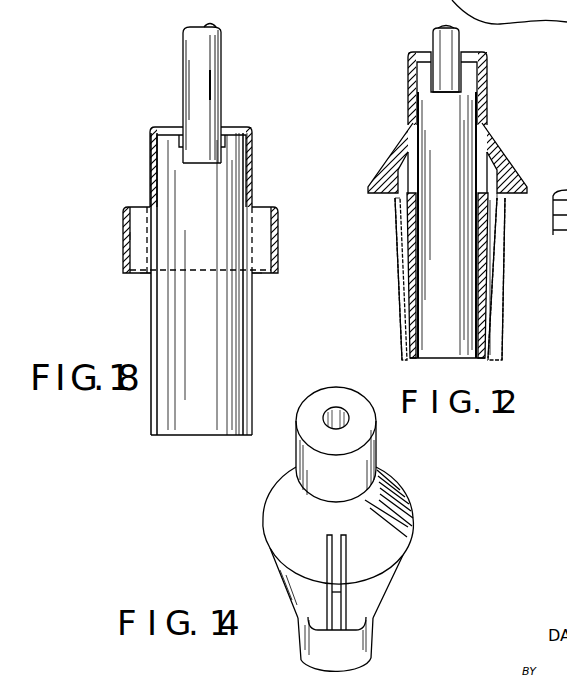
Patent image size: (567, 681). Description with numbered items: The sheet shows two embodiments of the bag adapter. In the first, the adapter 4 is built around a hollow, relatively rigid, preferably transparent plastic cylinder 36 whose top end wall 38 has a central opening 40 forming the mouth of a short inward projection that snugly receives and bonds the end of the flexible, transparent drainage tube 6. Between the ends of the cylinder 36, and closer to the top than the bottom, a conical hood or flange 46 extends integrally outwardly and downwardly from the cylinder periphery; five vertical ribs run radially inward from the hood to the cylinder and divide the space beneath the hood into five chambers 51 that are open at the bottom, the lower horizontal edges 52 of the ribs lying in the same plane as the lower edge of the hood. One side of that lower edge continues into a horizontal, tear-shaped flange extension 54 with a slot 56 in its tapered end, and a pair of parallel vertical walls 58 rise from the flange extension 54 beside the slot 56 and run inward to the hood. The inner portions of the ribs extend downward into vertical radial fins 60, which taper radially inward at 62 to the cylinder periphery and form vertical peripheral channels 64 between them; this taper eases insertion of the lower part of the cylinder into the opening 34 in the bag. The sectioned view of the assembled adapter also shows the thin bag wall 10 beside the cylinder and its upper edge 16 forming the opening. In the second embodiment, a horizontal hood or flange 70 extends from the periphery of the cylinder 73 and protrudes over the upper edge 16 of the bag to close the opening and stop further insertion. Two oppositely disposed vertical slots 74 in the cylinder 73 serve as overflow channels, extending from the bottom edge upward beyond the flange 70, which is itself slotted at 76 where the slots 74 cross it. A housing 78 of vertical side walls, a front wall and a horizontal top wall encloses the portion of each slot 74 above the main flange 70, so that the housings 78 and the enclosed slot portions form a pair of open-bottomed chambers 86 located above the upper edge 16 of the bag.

In FIG. 12, the adapter 4 is at (402, 82).
In FIG. 14, the adapter 4 is at (414, 499).
In FIG. 18, the drainage tube 6 is at (210, 77).
In FIG. 12, the drainage tube 6 is at (462, 40).
In FIG. 12, the protective sleeve 10 is at (395, 262).
In FIG. 12, the upper edge of the bag 16 is at (380, 168).
In FIG. 12, the opening in the bag 34 is at (393, 205).
In FIG. 12, the cylinder 36 is at (488, 86).
In FIG. 14, the cylinder 36 is at (367, 451).
In FIG. 18, the top end wall 38 is at (222, 140).
In FIG. 12, the opening 40 is at (436, 49).
In FIG. 14, the opening 40 is at (340, 412).
In FIG. 12, the hood or flange 46 is at (490, 144).
In FIG. 14, the hood or flange 46 is at (403, 523).
In FIG. 12, the chambers 51 is at (508, 164).
In FIG. 12, the lower horizontal edges of the ribs 52 is at (507, 195).
In FIG. 14, the flange extension 54 is at (305, 586).
In FIG. 14, the slot 56 is at (337, 609).
In FIG. 14, the vertical walls 58 is at (327, 563).
In FIG. 12, the fins 60 is at (490, 222).
In FIG. 14, the fins 60 is at (375, 618).
In FIG. 12, the taper 62 is at (497, 265).
In FIG. 12, the peripheral channels 64 is at (405, 233).
In FIG. 14, the peripheral channels 64 is at (310, 639).
In FIG. 18, the hood or flange 70 is at (141, 274).
In FIG. 18, the cylinder 73 is at (253, 167).
In FIG. 18, the vertical slots 74 is at (247, 230).
In FIG. 18, the flange slot 76 is at (262, 275).
In FIG. 18, the housing 78 is at (280, 243).
In FIG. 18, the open-bottomed chambers 86 is at (133, 235).